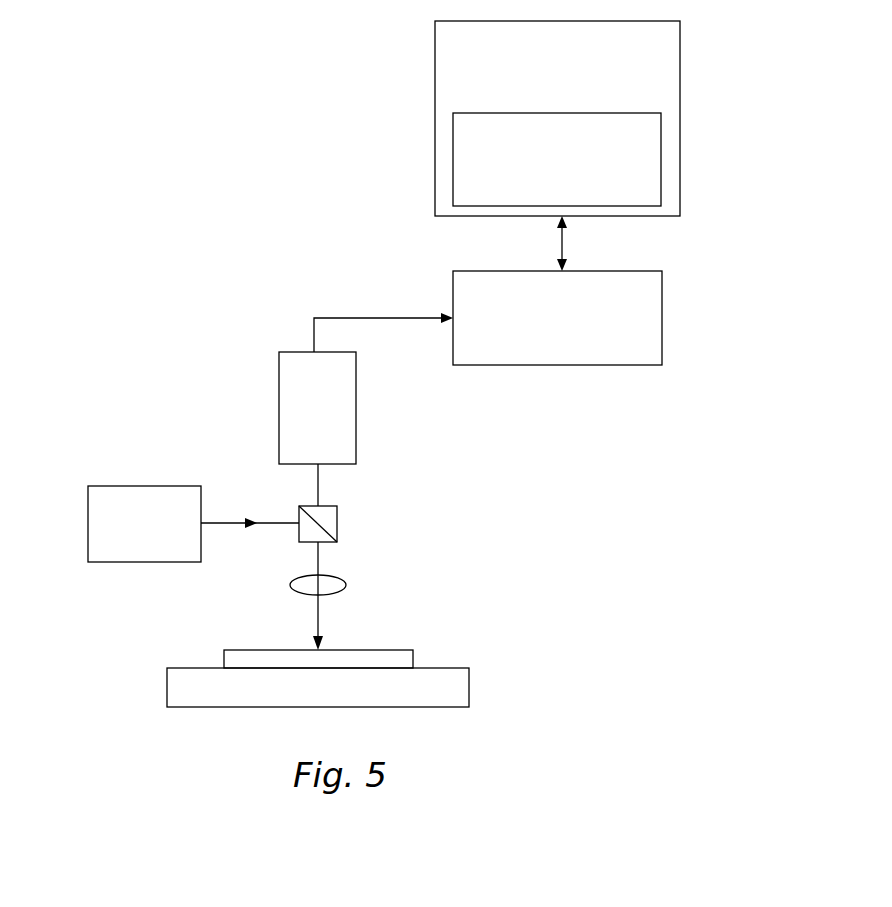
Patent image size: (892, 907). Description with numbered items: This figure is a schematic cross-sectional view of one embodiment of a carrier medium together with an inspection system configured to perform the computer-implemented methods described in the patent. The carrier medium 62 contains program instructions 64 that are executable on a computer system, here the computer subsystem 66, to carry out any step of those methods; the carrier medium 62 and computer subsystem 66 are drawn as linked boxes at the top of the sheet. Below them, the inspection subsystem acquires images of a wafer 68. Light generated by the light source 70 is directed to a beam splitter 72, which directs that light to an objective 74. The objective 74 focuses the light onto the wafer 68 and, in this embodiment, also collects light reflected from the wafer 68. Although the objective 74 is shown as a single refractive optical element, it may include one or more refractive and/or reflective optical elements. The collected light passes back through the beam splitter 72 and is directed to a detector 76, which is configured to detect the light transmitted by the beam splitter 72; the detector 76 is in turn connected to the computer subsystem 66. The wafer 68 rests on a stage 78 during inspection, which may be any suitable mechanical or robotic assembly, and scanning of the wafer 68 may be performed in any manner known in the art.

The carrier medium 62 is at (680, 37).
The program instructions 64 is at (661, 147).
The computer subsystem 66 is at (662, 308).
The wafer 68 is at (403, 650).
The light source 70 is at (88, 520).
The beam splitter 72 is at (337, 523).
The objective 74 is at (298, 577).
The detector 76 is at (279, 406).
The stage 78 is at (469, 688).